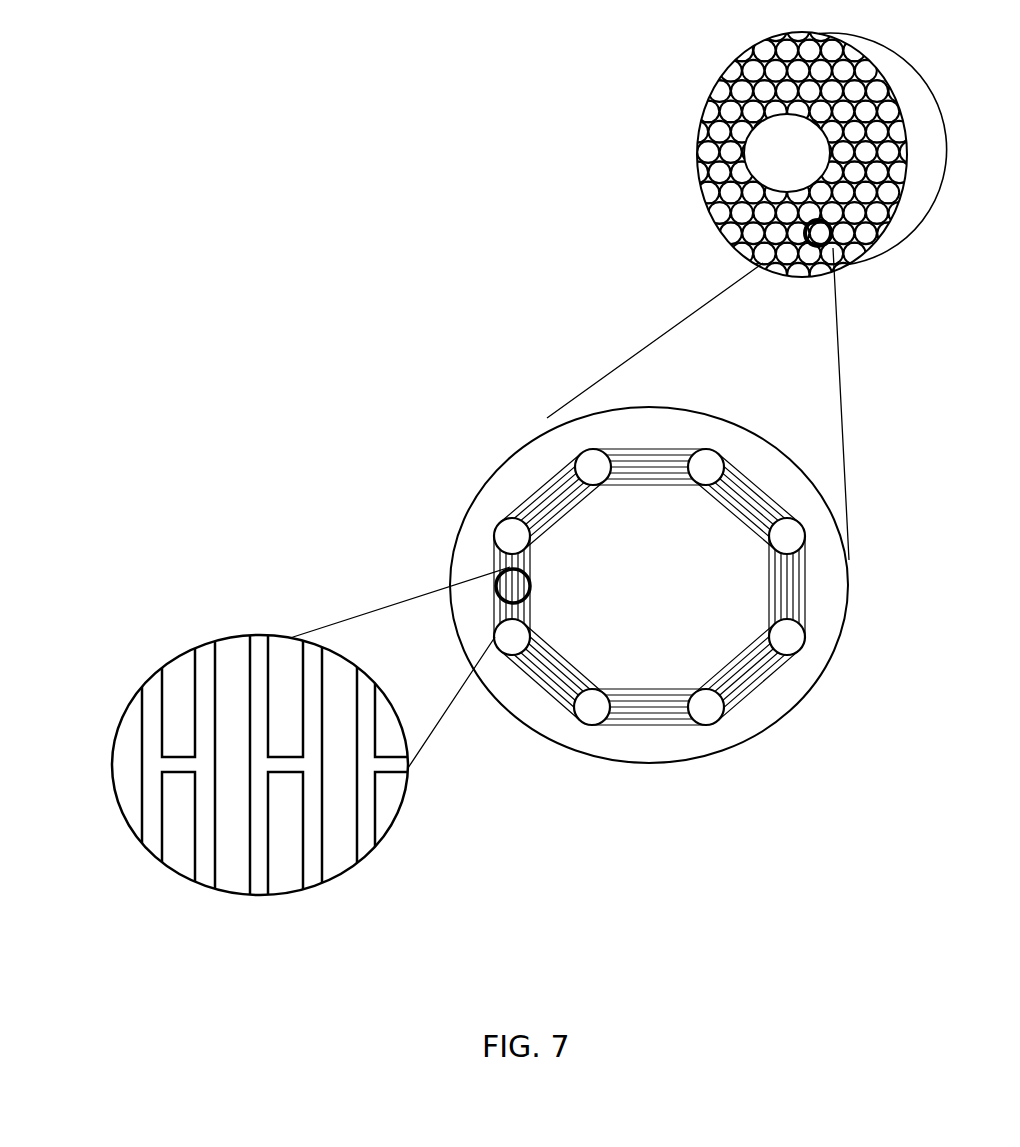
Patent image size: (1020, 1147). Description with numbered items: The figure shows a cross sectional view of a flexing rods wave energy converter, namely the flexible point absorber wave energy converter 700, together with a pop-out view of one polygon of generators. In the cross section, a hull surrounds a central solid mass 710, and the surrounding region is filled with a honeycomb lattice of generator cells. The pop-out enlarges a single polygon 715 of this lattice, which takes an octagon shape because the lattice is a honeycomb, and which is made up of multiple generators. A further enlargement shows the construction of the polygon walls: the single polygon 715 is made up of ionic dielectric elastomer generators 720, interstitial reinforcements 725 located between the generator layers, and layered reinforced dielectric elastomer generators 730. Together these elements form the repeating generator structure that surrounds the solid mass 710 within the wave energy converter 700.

The flexible point absorber wave energy converter 700 is at (640, 138).
The solid mass 710 is at (807, 166).
The single polygon 715 is at (525, 480).
The ionic dielectric elastomer generators 720 is at (225, 753).
The interstitial reinforcements 725 is at (140, 713).
The layered reinforced dielectric elastomer generators 730 is at (208, 850).